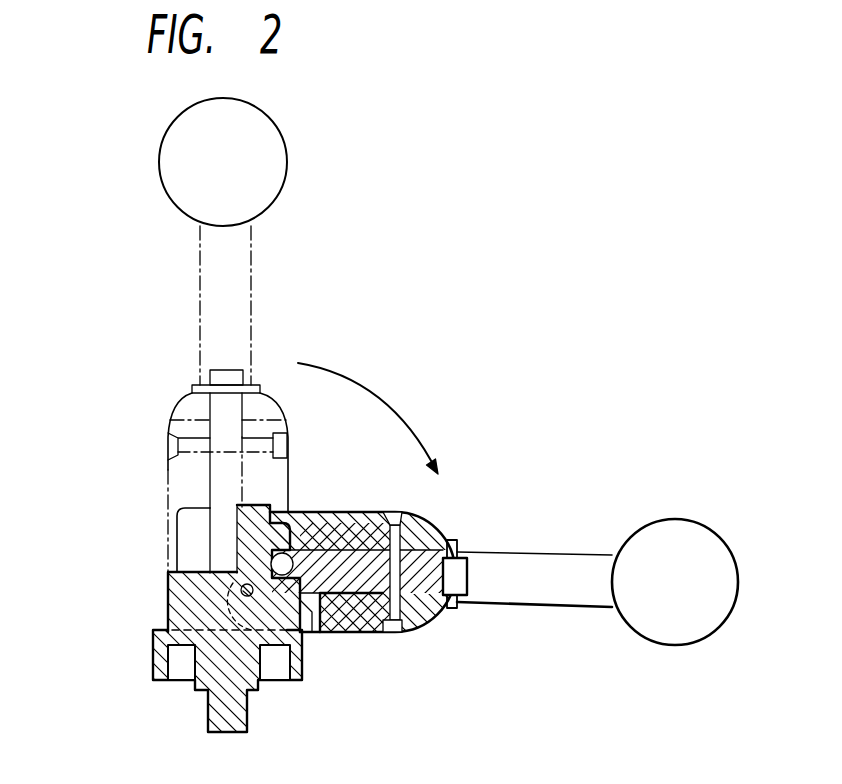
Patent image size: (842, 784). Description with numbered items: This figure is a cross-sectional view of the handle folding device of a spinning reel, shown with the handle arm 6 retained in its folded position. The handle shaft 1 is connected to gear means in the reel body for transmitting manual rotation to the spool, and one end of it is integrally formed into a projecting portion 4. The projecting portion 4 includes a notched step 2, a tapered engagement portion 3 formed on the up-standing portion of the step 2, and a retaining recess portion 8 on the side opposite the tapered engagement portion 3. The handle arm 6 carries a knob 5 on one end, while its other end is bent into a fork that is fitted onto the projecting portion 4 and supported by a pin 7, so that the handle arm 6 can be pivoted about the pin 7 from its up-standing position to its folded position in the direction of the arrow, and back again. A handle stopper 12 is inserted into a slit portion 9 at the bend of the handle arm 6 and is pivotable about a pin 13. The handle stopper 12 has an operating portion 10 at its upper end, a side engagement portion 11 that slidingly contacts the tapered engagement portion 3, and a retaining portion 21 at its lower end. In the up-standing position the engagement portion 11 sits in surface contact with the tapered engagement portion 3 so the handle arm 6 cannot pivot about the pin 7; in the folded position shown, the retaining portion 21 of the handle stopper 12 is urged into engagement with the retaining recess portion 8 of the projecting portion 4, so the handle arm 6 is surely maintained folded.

The handle shaft 1 is at (248, 718).
The notched step 2 is at (228, 557).
The tapered engagement portion 3 is at (232, 536).
The projecting portion 4 is at (303, 618).
The knob 5 is at (633, 545).
The handle arm 6 is at (567, 552).
The pin 7 is at (240, 588).
The retaining recess portion 8 is at (289, 530).
The slit portion 9 is at (382, 634).
The operating portion 10 is at (466, 575).
The engagement portion 11 is at (356, 634).
The handle stopper 12 is at (355, 560).
The pin 13 is at (430, 516).
The retaining portion 21 is at (318, 632).